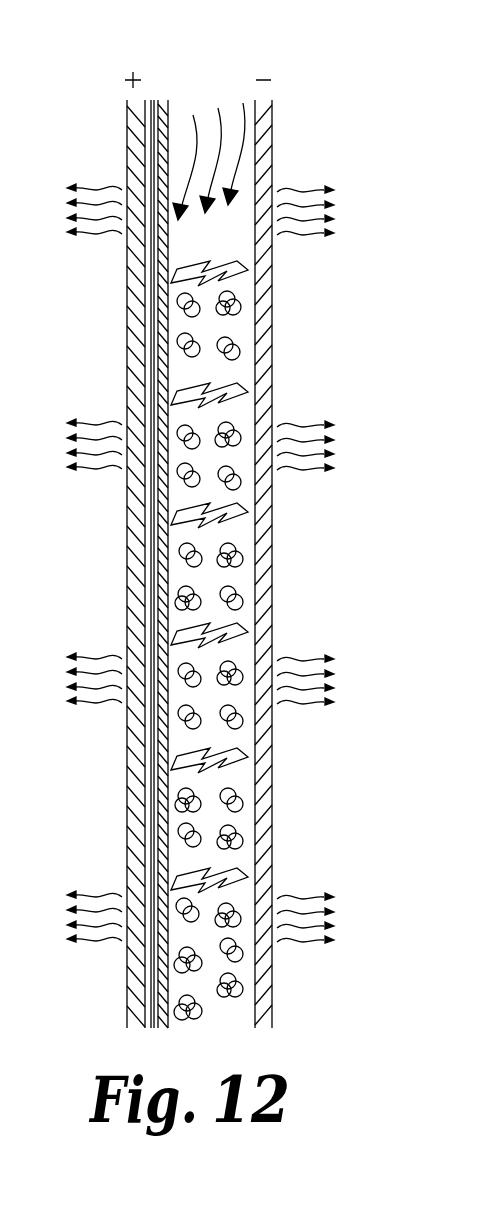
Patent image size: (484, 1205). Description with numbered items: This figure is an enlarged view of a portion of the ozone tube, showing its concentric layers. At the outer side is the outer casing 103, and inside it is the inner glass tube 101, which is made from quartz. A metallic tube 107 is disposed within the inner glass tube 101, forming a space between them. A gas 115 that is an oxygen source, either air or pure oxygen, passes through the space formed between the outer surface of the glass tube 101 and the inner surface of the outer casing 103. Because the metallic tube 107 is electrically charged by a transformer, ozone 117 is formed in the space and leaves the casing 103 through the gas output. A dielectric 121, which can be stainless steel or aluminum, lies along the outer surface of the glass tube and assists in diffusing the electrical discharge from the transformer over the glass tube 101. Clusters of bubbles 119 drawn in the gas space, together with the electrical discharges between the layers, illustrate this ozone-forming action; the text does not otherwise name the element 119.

The inner glass tube 101 is at (153, 100).
The outer casing 103 is at (262, 342).
The metallic tube 107 is at (137, 308).
The gas 115 is at (204, 108).
The ozone 117 is at (85, 163).
The gas bubbles 119 is at (200, 533).
The dielectric 121 is at (172, 768).